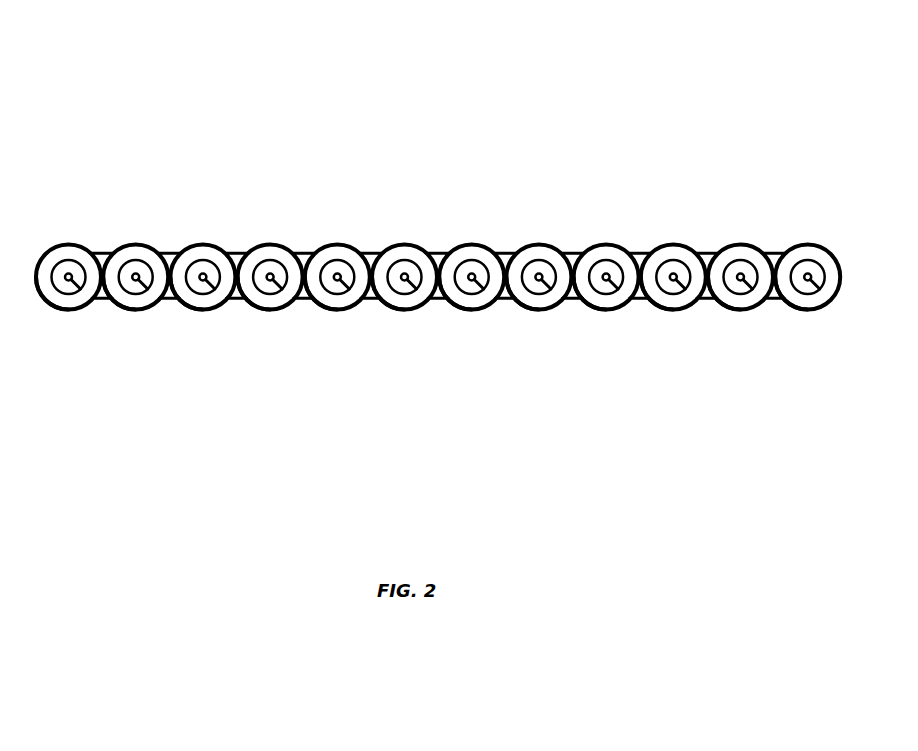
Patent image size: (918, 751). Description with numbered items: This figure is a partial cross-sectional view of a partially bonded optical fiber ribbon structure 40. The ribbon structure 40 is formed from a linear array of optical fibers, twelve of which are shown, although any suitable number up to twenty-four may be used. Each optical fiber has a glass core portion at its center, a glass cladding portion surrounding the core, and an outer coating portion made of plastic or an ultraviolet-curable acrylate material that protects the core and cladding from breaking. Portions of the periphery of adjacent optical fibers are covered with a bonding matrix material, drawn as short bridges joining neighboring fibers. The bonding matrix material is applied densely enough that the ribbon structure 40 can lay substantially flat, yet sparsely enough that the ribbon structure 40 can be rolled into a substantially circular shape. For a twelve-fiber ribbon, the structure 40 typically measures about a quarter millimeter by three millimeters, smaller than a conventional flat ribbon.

The partially bonded optical fiber ribbon structure 40 is at (426, 34).